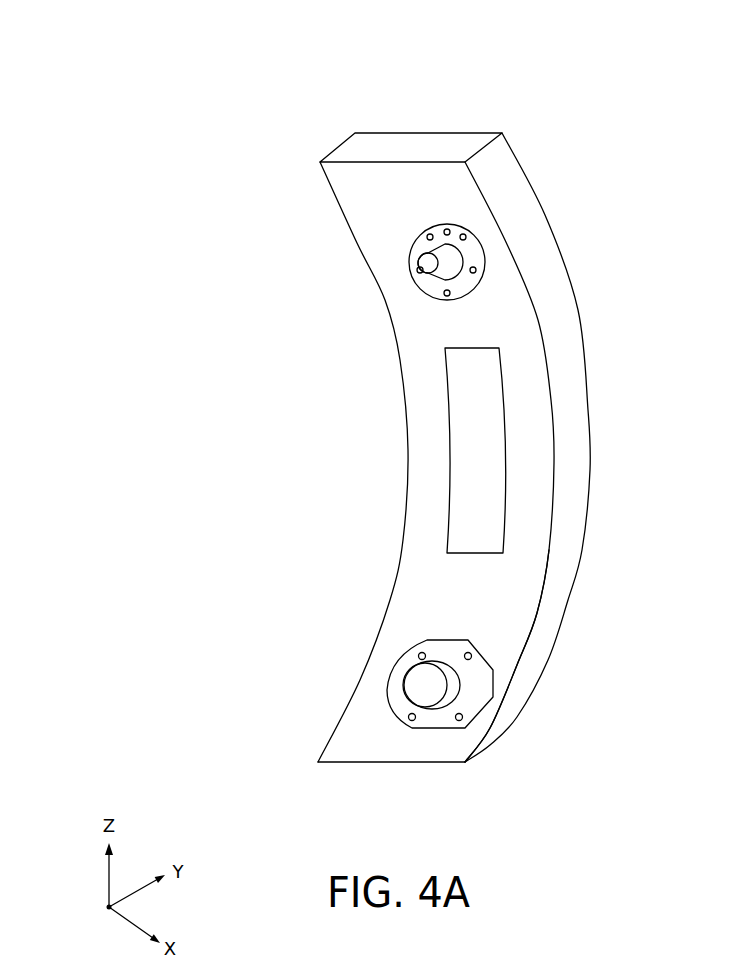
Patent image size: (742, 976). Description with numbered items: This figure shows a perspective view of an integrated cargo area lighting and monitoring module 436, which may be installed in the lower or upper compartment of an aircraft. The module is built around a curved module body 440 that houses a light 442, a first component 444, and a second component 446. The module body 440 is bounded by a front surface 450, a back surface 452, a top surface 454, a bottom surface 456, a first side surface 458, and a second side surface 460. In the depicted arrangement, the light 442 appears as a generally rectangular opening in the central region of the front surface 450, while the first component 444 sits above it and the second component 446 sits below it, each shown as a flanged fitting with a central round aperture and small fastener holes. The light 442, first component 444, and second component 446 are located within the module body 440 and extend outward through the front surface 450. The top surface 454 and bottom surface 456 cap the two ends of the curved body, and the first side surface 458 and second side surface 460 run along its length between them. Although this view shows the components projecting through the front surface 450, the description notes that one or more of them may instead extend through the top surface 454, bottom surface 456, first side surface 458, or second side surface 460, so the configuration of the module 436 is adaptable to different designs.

The integrated cargo area lighting and monitoring module 436 is at (230, 124).
The module body 440 is at (622, 276).
The light 442 is at (455, 383).
The first component 444 is at (425, 257).
The second component 446 is at (398, 683).
The front surface 450 is at (510, 623).
The back surface 452 is at (545, 200).
The top surface 454 is at (385, 142).
The bottom surface 456 is at (363, 763).
The first side surface 458 is at (408, 473).
The second side surface 460 is at (572, 425).